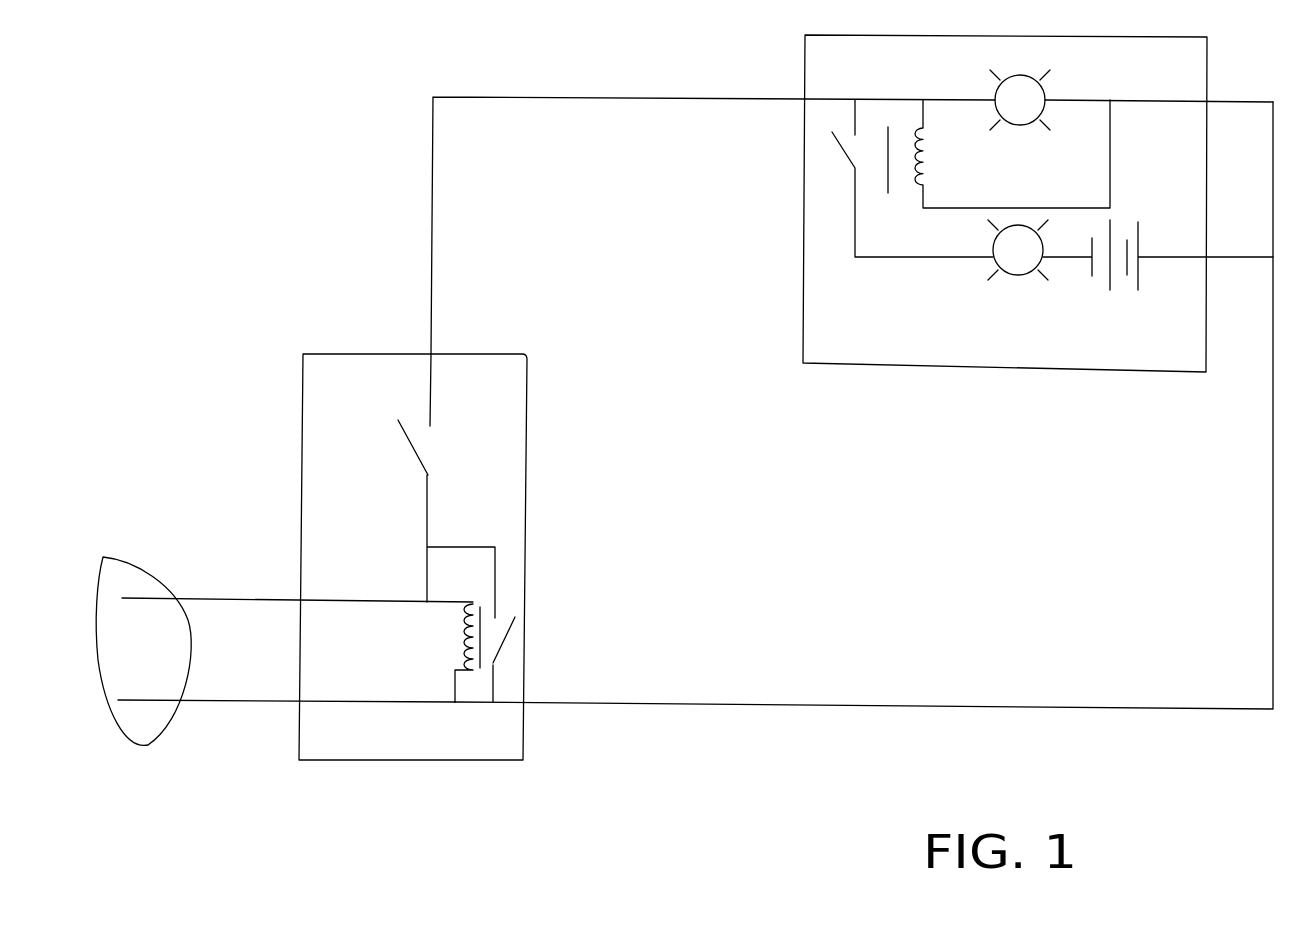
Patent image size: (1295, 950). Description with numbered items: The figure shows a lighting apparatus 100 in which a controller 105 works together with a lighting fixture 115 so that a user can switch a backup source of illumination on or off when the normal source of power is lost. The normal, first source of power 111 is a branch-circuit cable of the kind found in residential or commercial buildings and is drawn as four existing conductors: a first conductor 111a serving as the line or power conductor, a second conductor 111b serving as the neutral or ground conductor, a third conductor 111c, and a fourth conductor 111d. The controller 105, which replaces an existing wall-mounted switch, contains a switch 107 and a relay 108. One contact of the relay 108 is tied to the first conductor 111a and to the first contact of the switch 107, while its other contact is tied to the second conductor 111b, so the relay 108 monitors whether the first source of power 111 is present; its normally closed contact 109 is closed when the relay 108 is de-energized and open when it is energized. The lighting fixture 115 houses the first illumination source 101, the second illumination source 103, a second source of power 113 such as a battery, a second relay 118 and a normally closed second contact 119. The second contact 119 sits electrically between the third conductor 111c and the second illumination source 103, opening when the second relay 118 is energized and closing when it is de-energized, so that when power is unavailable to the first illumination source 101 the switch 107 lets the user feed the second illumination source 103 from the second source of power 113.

The lighting apparatus 100 is at (308, 64).
The first illumination source 101 is at (1047, 83).
The second illumination source 103 is at (1018, 280).
The controller 105 is at (527, 432).
The switch 107 is at (436, 455).
The relay 108 is at (452, 645).
The contact 109 is at (510, 640).
The first source of power 111 is at (103, 557).
The first conductor 111a is at (223, 598).
The second conductor 111b is at (232, 700).
The third conductor 111c is at (482, 97).
The fourth conductor 111d is at (743, 705).
The second source of power 113 is at (1108, 280).
The lighting fixture 115 is at (845, 367).
The second relay 118 is at (935, 153).
The second contact 119 is at (835, 157).